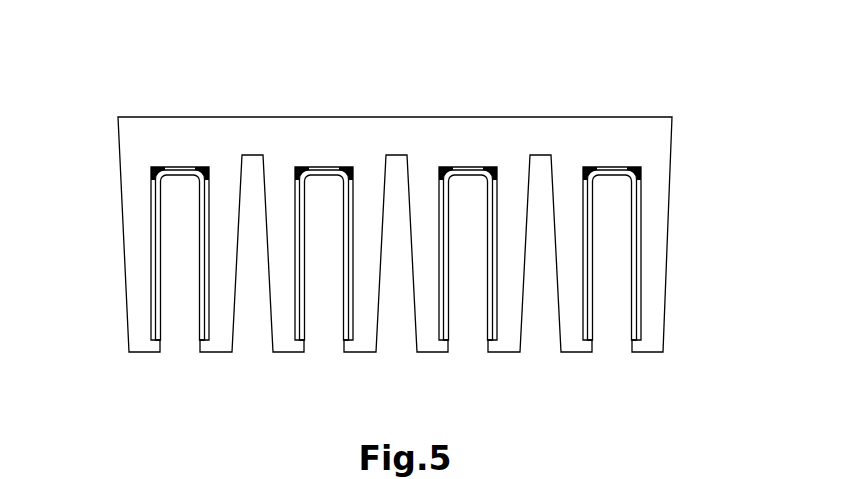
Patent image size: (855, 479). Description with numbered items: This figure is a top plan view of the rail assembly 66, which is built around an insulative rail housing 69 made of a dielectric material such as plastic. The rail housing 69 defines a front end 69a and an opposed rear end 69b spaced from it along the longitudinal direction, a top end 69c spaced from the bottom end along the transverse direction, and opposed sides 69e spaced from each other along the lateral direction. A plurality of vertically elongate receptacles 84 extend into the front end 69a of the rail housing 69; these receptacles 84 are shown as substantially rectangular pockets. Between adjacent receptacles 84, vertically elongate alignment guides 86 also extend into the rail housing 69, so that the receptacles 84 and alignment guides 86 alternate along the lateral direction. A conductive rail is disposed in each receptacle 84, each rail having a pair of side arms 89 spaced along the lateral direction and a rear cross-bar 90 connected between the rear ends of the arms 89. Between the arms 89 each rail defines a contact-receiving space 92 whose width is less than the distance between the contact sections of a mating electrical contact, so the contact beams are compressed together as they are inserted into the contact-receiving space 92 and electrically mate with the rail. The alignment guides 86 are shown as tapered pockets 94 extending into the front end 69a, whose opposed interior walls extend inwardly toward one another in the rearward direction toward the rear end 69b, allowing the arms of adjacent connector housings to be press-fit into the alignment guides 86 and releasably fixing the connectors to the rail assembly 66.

The rail assembly 66 is at (125, 95).
The rail housing 69 is at (593, 117).
The front end 69a is at (285, 353).
The rear end 69b is at (375, 117).
The top end 69c is at (462, 147).
The sides 69e is at (122, 237).
The receptacles 84 is at (182, 346).
The alignment guides 86 is at (253, 346).
The side arms 89 is at (212, 212).
The rear cross-bar 90 is at (179, 170).
The contact-receiving space 92 is at (177, 272).
The tapered pockets 94 is at (535, 260).